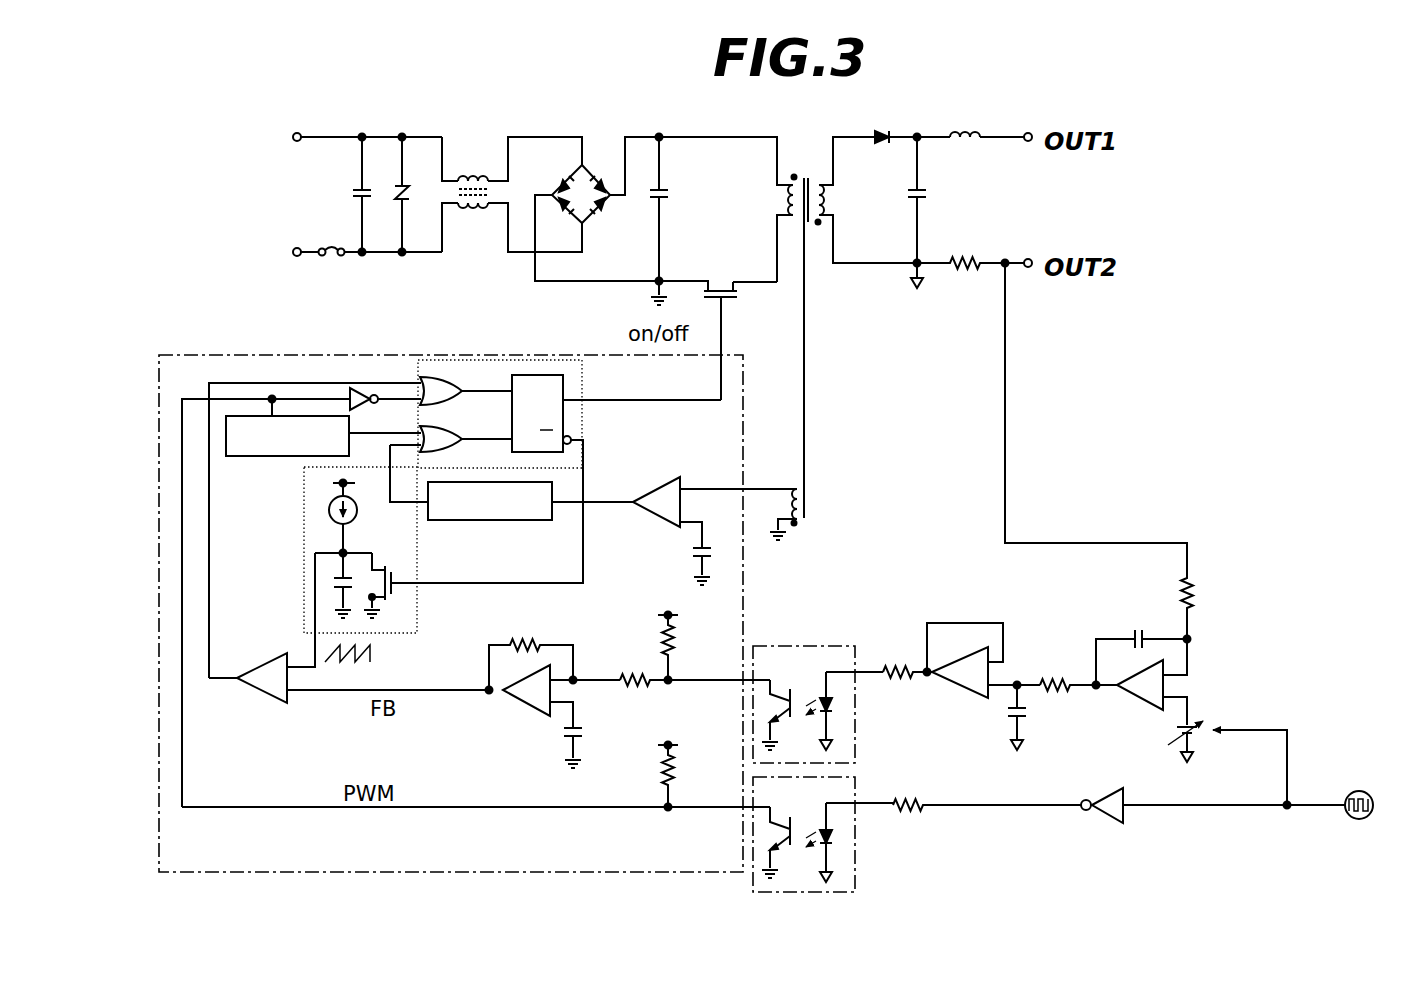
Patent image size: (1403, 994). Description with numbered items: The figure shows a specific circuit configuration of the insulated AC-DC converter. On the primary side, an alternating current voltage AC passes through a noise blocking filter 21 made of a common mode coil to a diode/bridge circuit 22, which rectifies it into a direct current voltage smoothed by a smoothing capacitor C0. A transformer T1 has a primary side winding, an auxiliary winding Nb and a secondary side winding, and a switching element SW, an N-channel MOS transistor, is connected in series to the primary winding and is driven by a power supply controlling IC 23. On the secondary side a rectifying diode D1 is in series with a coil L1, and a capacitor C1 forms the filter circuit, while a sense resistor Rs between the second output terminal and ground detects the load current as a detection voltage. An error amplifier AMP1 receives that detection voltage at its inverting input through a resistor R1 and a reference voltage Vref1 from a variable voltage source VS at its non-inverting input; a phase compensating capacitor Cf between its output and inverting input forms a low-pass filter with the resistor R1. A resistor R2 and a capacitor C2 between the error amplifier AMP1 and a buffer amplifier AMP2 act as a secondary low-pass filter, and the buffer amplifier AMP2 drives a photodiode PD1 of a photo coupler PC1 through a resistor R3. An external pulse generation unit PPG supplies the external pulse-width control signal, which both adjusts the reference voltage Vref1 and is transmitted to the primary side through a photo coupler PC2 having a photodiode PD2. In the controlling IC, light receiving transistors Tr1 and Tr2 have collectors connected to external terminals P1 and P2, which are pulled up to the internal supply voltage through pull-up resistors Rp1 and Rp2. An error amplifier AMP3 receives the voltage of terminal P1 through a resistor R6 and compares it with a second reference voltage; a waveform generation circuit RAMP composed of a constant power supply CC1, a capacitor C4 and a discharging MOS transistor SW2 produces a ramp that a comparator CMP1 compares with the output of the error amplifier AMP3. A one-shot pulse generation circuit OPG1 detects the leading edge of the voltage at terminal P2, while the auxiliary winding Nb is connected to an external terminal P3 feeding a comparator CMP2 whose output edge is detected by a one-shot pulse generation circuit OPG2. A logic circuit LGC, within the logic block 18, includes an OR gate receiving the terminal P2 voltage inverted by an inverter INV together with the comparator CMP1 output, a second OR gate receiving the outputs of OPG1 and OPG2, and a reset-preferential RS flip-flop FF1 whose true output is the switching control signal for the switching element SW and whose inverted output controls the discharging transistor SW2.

The noise blocking filter 21 is at (480, 163).
The diode/bridge circuit 22 is at (598, 162).
The power supply controlling IC 23 is at (243, 354).
The logic circuit block 18 is at (585, 344).
The alternating current voltage AC is at (348, 194).
The smoothing capacitor C0 is at (679, 220).
The transformer T1 is at (788, 327).
The rectifying diode D1 is at (908, 125).
The coil L1 is at (991, 124).
The capacitor C1 is at (936, 211).
The sense resistor Rs is at (974, 251).
The resistor R1 is at (1120, 453).
The switching element SW is at (718, 327).
The inverter INV is at (385, 406).
The one-shot pulse generation circuit OPG1 is at (310, 458).
The one-shot pulse generation circuit OPG2 is at (455, 522).
The RS flip-flop FF1 is at (566, 391).
The logic circuit LGC is at (583, 410).
The comparator CMP2 is at (650, 512).
The auxiliary winding Nb is at (779, 501).
The external terminal P3 is at (743, 488).
The waveform generation circuit RAMP is at (390, 567).
The constant power supply CC1 is at (342, 548).
The discharging MOS transistor SW2 is at (391, 581).
The capacitor C4 is at (331, 589).
The comparator CMP1 is at (255, 690).
The error amplifier AMP3 is at (520, 705).
The resistor R6 is at (691, 662).
The pull-up resistor Rp1 is at (697, 643).
The pull-up resistor Rp2 is at (476, 773).
The external terminal P1 is at (743, 681).
The external terminal P2 is at (743, 810).
The photo coupler PC1 is at (830, 679).
The photo coupler PC2 is at (852, 835).
The light receiving transistor Tr1 is at (784, 710).
The light receiving transistor Tr2 is at (784, 838).
The photodiode PD1 is at (838, 708).
The photodiode PD2 is at (838, 836).
The resistor R3 is at (907, 672).
The buffer amplifier AMP2 is at (957, 690).
The capacitor C2 is at (1033, 716).
The resistor R2 is at (1077, 669).
The phase compensating capacitor Cf is at (1141, 644).
The error amplifier AMP1 is at (1130, 695).
The variable voltage source VS is at (1210, 750).
The reference voltage Vref1 is at (1224, 707).
The external PWM pulse generation unit PPG is at (1352, 820).